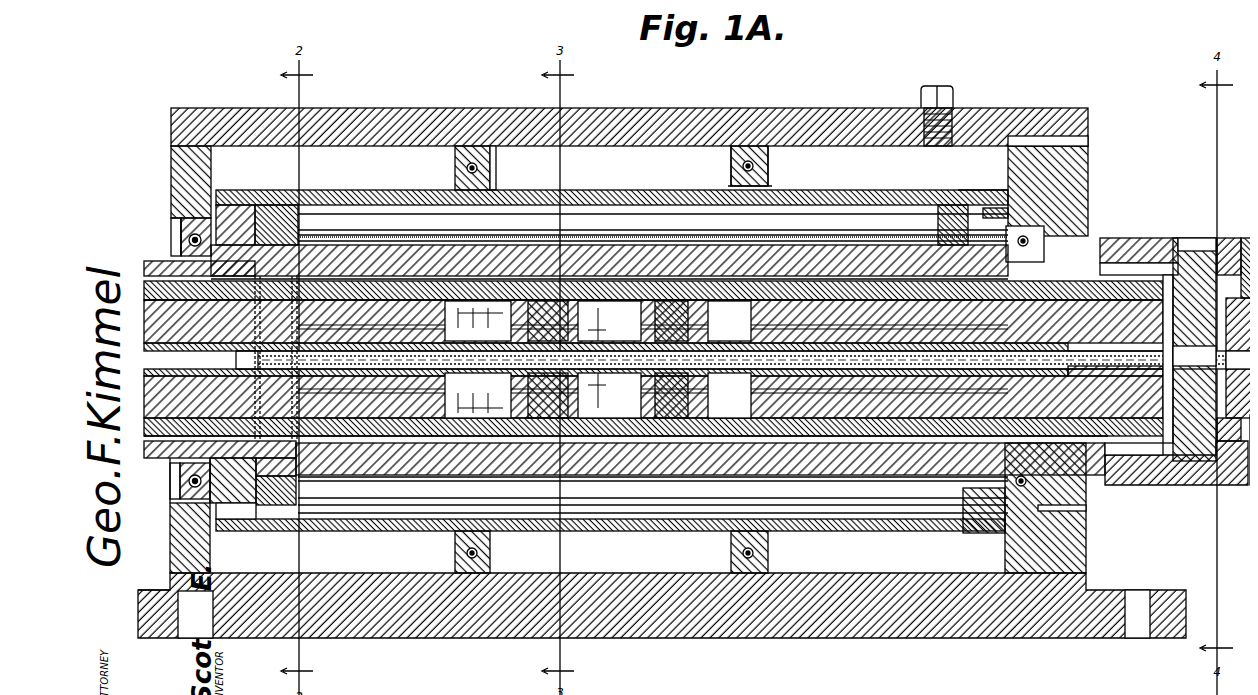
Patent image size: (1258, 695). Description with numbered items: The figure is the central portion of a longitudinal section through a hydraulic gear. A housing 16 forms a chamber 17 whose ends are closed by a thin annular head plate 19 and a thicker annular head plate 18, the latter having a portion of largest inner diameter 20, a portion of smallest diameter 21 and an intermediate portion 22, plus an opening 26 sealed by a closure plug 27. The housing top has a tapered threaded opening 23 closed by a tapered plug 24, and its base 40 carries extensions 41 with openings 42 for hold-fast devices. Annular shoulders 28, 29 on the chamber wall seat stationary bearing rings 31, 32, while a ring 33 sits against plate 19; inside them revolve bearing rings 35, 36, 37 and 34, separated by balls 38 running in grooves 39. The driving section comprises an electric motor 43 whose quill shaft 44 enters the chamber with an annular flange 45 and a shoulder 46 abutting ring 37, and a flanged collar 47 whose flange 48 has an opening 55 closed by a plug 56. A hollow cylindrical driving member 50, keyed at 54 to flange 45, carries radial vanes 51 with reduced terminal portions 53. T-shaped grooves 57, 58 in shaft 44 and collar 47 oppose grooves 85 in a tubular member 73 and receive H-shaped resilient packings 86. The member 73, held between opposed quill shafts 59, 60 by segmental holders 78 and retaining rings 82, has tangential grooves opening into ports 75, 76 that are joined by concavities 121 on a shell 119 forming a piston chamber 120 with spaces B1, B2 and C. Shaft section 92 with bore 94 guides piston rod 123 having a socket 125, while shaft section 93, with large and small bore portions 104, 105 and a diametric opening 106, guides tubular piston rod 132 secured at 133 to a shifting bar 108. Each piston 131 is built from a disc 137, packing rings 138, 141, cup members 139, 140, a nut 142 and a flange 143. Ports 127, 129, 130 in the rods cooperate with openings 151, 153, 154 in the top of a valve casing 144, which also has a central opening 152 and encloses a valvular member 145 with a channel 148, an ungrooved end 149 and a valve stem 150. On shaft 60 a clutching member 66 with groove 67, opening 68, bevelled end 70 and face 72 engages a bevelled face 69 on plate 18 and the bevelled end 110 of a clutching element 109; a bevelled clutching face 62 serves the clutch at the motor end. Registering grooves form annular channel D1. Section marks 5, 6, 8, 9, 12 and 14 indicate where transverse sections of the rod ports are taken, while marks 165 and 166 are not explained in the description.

The housing 16 is at (790, 118).
The annular head plate 19 is at (170, 160).
The annular head plate 18 is at (1070, 170).
The opening 23 is at (914, 108).
The tapered plug 24 is at (946, 98).
The annular shoulder 29 is at (484, 150).
The bearing ring 36 is at (484, 168).
The bearing ring 32 is at (447, 150).
The bearing balls 38 is at (462, 162).
The annular shoulder 28 is at (723, 146).
The bearing ring 31 is at (760, 150).
The bearing ring 35 is at (760, 166).
The bearing ring 33 is at (175, 219).
The bearing ring 37 is at (178, 244).
The bearing ring 34 is at (1000, 232).
The chamber 17 is at (990, 195).
The reduced terminal portion 53 is at (272, 203).
The semi-circular port 75 is at (428, 233).
The port 127 is at (355, 232).
The valve stem 150 is at (380, 230).
The cross sectional line 12— 12 is at (624, 360).
The quill shaft 44 is at (150, 258).
The free end terminal 149 is at (150, 278).
The quill shaft 59 is at (150, 290).
The piston rod 123 is at (150, 320).
The bore 94 is at (150, 392).
The socket 125 is at (228, 352).
The bevelled clutching face 62 is at (654, 335).
The segmental shaped holders 78 is at (250, 240).
The retaining ring 82 is at (262, 250).
The annular flange 45 is at (222, 225).
The annular channel D1 is at (288, 240).
The valve port 8 is at (599, 359).
The valve ports 9 10 9 is at (609, 359).
The tubular shell 119 is at (445, 480).
The port 129 is at (604, 330).
The channel 148 is at (504, 333).
The opening 151 is at (503, 322).
The opening 152 is at (622, 313).
The cup-shaped member 140 is at (597, 218).
The flange 143 is at (632, 220).
The packing ring 141 is at (560, 292).
The circular disc 137 is at (540, 292).
The cup-shaped member 139 is at (500, 292).
The concavities 121 is at (690, 292).
The tubular member 73 is at (712, 292).
The opening 154 is at (835, 292).
The bevelled inner end 110 is at (1240, 492).
The space B1 is at (742, 341).
The space B2 is at (499, 346).
The tubular valve casing 144 is at (467, 387).
The nut 142 is at (722, 482).
The piston chamber 120 is at (618, 411).
The space C is at (614, 380).
The valvular member 145 is at (632, 388).
The packing ring 138 is at (592, 416).
The port 130 is at (620, 414).
The opening 153 is at (722, 390).
The passage 14 is at (746, 413).
The port 6 is at (759, 415).
The ports 5 6 7 5 is at (468, 361).
The piston 131 is at (498, 466).
The securing point 133 is at (1225, 286).
The tubular piston rod 132 is at (870, 440).
The passage 165 is at (860, 466).
The packing 86 is at (200, 480).
The annular groove 58 is at (930, 470).
The annular groove 85 is at (300, 480).
The partially-circular port 76 is at (889, 213).
The key 54 is at (235, 523).
The shaft section 92 is at (380, 480).
The stud 166 is at (175, 460).
The peripheral shoulder 46 is at (185, 473).
The annular groove 57 is at (172, 484).
The grooves 39 is at (742, 155).
The vanes 51 is at (650, 218).
The driving member 50 is at (652, 524).
The flange 48 is at (920, 505).
The opening 55 is at (950, 510).
The electric motor 43 is at (985, 510).
The removable plug 56 is at (992, 518).
The opening 26 is at (1050, 510).
The closure plug 27 is at (1070, 500).
The shifting bar 108 is at (1147, 523).
The bevelled clutching face 69 is at (1098, 470).
The clutching member 66 is at (1122, 470).
The shaft section 93 is at (1140, 430).
The annular groove 67 is at (1195, 477).
The bevelled end 70 is at (1125, 240).
The bore portion of larger diameter 104 is at (1139, 269).
The quill shaft 60 is at (1160, 268).
The opening 68 is at (1190, 238).
The diametrically extending opening 106 is at (1115, 360).
The portion of smallest diameter 21 is at (1075, 230).
The flanged collar 47 is at (1040, 232).
The portion of intermediate diameter 22 is at (1030, 220).
The portion of largest diameter 20 is at (1030, 210).
The clutching element 109 is at (1240, 230).
The bevelled clutching face 72 is at (1242, 232).
The bore portion of smaller diameter 105 is at (1229, 429).
The base 40 is at (828, 618).
The extensions 41 is at (160, 582).
The openings 42 is at (150, 630).